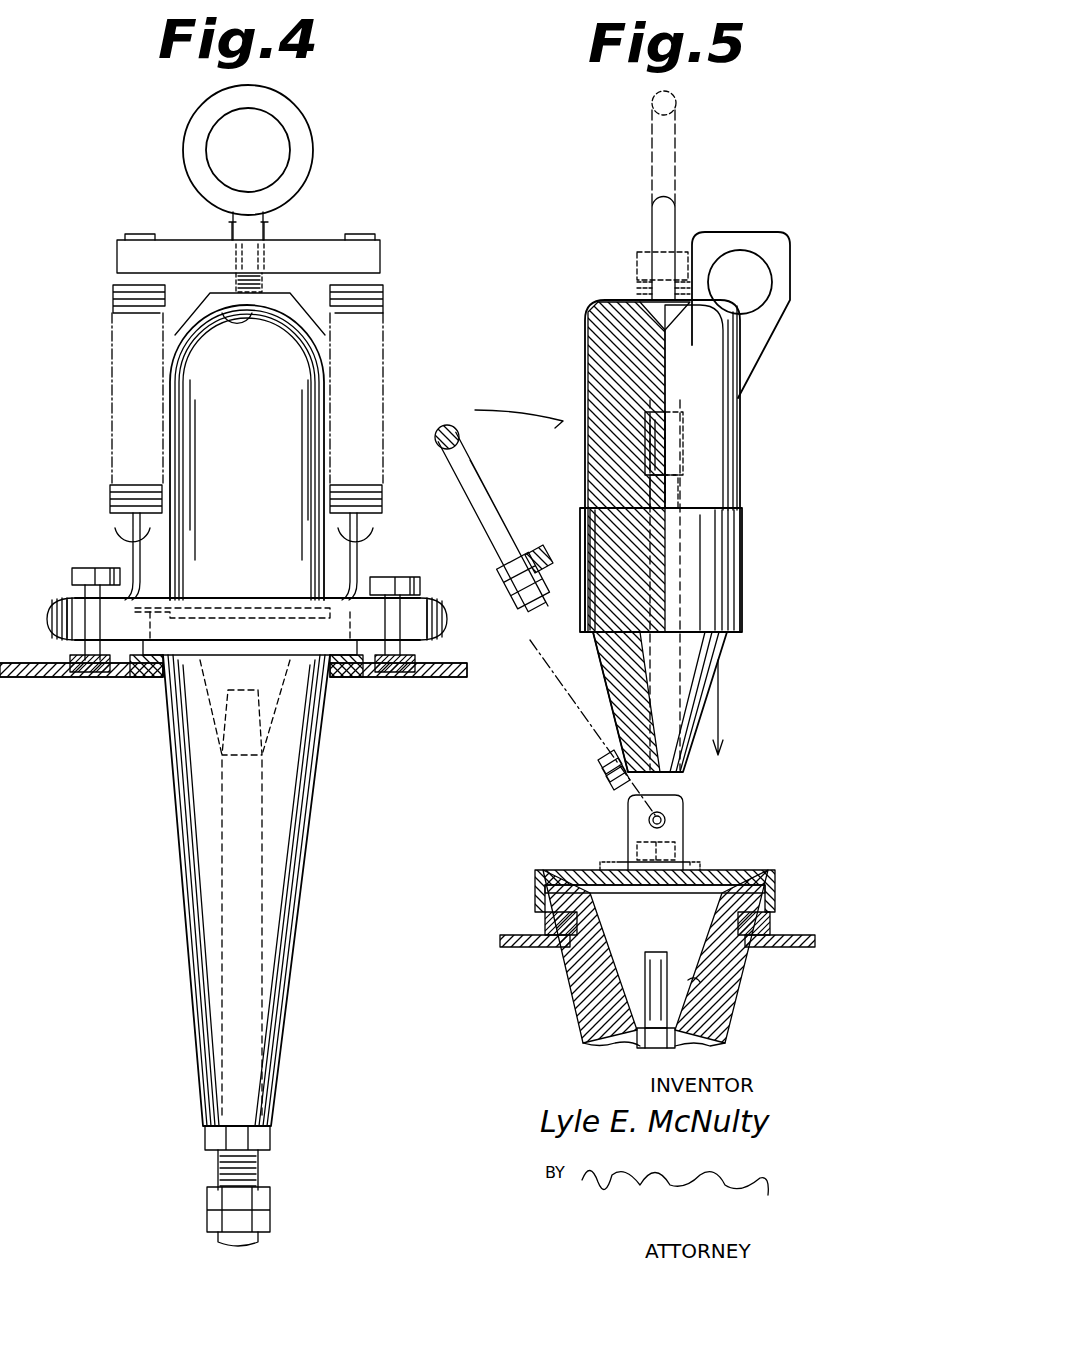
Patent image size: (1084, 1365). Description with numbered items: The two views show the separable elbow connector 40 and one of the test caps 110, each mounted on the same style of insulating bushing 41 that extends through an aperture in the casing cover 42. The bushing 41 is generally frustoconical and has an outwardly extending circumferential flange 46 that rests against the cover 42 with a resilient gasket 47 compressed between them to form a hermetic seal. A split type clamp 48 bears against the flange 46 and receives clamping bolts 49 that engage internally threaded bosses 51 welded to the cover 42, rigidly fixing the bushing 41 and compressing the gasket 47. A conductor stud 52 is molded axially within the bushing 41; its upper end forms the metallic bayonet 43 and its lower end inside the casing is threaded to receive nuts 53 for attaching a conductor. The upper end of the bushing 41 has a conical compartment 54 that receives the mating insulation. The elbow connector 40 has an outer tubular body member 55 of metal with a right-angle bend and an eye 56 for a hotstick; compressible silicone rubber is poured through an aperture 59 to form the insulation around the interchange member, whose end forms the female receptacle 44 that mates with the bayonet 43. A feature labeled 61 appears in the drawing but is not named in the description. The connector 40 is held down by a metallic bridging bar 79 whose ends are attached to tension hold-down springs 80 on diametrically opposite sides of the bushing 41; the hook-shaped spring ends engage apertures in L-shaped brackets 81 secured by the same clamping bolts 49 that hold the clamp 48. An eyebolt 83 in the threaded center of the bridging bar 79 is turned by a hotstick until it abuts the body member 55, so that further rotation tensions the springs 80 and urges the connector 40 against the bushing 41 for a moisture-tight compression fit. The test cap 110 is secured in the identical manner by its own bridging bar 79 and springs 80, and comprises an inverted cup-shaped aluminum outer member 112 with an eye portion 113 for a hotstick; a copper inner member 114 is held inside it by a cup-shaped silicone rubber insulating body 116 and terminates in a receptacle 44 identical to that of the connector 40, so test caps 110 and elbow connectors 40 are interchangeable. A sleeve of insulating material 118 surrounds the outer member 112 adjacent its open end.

In FIG. 4, the separable elbow connector 40 is at (160, 444).
In FIG. 4, the insulating bushing 41 is at (190, 915).
In FIG. 5, the insulating bushing 41 is at (585, 1006).
In FIG. 4, the casing cover 42 is at (52, 677).
In FIG. 5, the casing cover 42 is at (500, 942).
In FIG. 4, the bayonet 43 is at (160, 740).
In FIG. 5, the bayonet 43 is at (655, 952).
In FIG. 5, the receptacle 44 is at (716, 690).
In FIG. 4, the circumferential flange 46 is at (240, 648).
In FIG. 5, the circumferential flange 46 is at (590, 888).
In FIG. 4, the resilient gasket 47 is at (145, 670).
In FIG. 5, the resilient gasket 47 is at (548, 925).
In FIG. 4, the split type clamp 48 is at (60, 600).
In FIG. 5, the split type clamp 48 is at (536, 872).
In FIG. 4, the clamping bolts 49 is at (85, 568).
In FIG. 5, the clamping bolts 49 is at (628, 842).
In FIG. 4, the internally threaded bosses 51 is at (70, 656).
In FIG. 4, the conductor stud 52 is at (207, 1055).
In FIG. 5, the conductor stud 52 is at (652, 1042).
In FIG. 4, the nuts 53 is at (207, 1212).
In FIG. 4, the conical compartment 54 is at (322, 737).
In FIG. 5, the conical compartment 54 is at (705, 985).
In FIG. 4, the outer tubular body member 55 is at (256, 466).
In FIG. 4, the eye 56 is at (232, 225).
In FIG. 4, the aperture 59 is at (236, 322).
In FIG. 4, the recess 61 is at (328, 718).
In FIG. 4, the bridging bar 79 is at (330, 253).
In FIG. 5, the bridging bar 79 is at (636, 257).
In FIG. 4, the tension hold-down springs 80 is at (113, 297).
In FIG. 5, the tension hold-down springs 80 is at (636, 290).
In FIG. 4, the L-shaped brackets 81 is at (357, 572).
In FIG. 5, the L-shaped brackets 81 is at (683, 820).
In FIG. 4, the eyebolt 83 is at (183, 130).
In FIG. 5, the eyebolt 83 is at (678, 103).
In FIG. 5, the test cap 110 is at (750, 443).
In FIG. 5, the outer member 112 is at (585, 353).
In FIG. 5, the eye portion 113 is at (777, 236).
In FIG. 5, the inner member 114 is at (650, 447).
In FIG. 5, the insulating body 116 is at (613, 488).
In FIG. 5, the sleeve of insulating material 118 is at (742, 548).